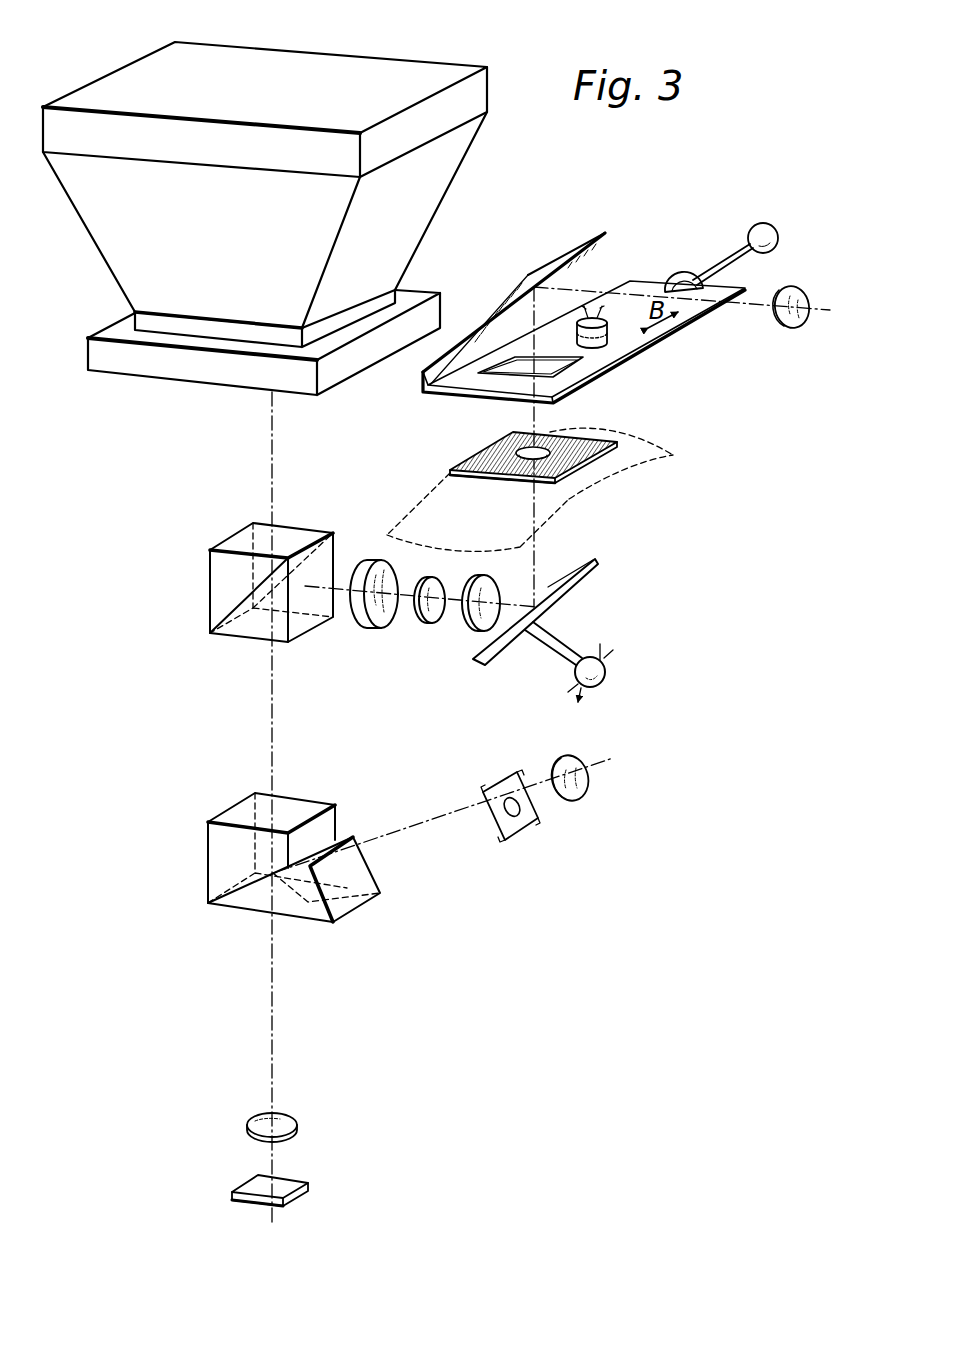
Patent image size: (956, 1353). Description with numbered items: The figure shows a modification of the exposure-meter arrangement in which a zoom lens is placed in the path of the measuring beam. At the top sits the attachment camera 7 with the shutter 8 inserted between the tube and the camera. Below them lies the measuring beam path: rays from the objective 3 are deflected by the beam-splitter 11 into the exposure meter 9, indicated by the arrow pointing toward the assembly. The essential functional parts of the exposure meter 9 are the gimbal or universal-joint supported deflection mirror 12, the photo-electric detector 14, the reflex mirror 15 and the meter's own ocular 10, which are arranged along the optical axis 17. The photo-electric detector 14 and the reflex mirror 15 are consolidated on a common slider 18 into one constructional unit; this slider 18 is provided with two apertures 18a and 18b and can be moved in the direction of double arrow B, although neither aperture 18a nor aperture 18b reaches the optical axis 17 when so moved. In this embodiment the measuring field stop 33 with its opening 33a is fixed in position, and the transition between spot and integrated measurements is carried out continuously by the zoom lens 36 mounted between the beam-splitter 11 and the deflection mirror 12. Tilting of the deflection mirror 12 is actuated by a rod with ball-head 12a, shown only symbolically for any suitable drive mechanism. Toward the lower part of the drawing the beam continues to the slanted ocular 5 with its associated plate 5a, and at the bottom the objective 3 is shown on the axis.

The attachment camera 7 is at (407, 130).
The shutter 8 is at (205, 368).
The reflex mirror 15 is at (516, 298).
The slider 18 is at (633, 298).
The aperture 18a is at (553, 374).
The aperture 18b is at (597, 352).
The photo-electric detector 14 is at (608, 334).
The ocular 10 is at (792, 318).
The optical axis 17 is at (537, 548).
The measuring field stop 33 is at (538, 483).
The diaphragm aperture 33a is at (543, 459).
The exposure meter 9 is at (648, 528).
The beam-splitter 11 is at (228, 588).
The zoom lens 36 is at (345, 625).
The deflection mirror 12 is at (510, 645).
The rod with ball-head 12a is at (594, 683).
The aperture plate 5a is at (517, 831).
The slanted ocular 5 is at (574, 798).
The objective 3 is at (291, 1121).